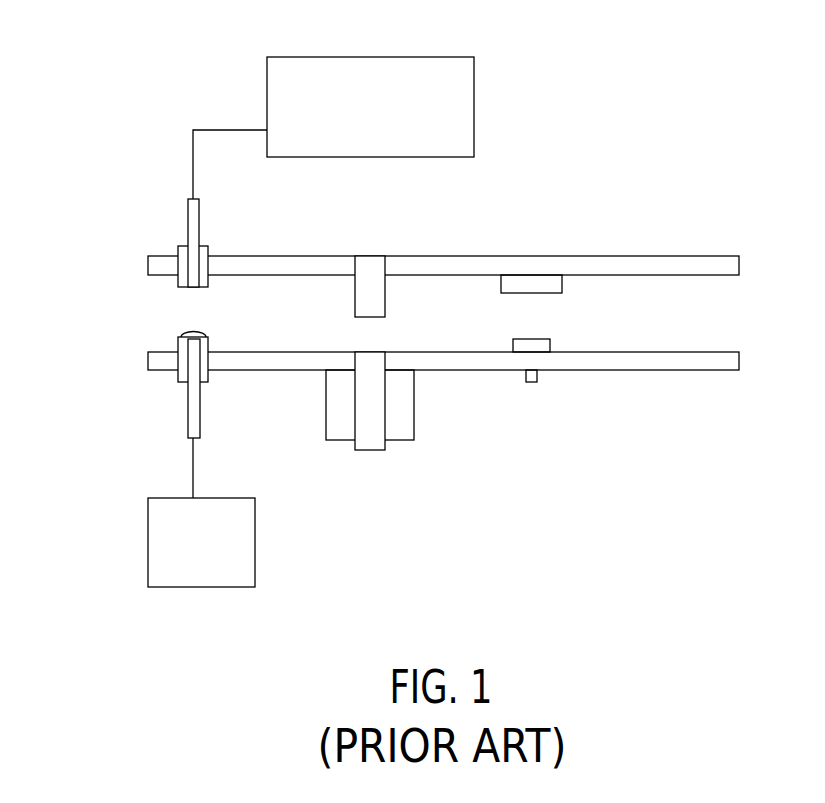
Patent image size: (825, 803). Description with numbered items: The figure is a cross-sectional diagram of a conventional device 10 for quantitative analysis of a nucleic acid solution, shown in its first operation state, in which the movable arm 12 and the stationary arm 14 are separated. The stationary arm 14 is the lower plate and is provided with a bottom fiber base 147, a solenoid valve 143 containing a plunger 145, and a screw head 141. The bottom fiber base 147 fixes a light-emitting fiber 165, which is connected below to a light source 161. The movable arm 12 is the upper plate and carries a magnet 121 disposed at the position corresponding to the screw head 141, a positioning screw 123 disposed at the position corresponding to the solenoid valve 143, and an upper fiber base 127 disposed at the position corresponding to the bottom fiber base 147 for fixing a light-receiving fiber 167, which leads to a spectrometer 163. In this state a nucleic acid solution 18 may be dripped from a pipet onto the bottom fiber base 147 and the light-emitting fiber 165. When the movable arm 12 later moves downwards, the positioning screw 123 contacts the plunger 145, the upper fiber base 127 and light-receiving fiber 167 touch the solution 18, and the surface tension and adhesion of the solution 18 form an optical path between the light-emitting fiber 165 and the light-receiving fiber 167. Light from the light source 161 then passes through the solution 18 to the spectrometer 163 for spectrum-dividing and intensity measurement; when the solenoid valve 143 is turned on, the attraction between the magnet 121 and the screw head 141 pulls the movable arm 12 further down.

The device for quantitative analysis of a nucleic acid solution 10 is at (688, 153).
The movable arm 12 is at (680, 255).
The stationary arm 14 is at (678, 368).
The nucleic acid solution 18 is at (183, 333).
The magnet 121 is at (532, 287).
The positioning screw 123 is at (363, 263).
The upper fiber base 127 is at (208, 242).
The screw head 141 is at (548, 346).
The solenoid valve 143 is at (343, 432).
The plunger 145 is at (370, 450).
The bottom fiber base 147 is at (203, 382).
The light source 161 is at (148, 558).
The spectrometer 163 is at (267, 112).
The light-emitting fiber 165 is at (188, 412).
The light-receiving fiber 167 is at (188, 208).